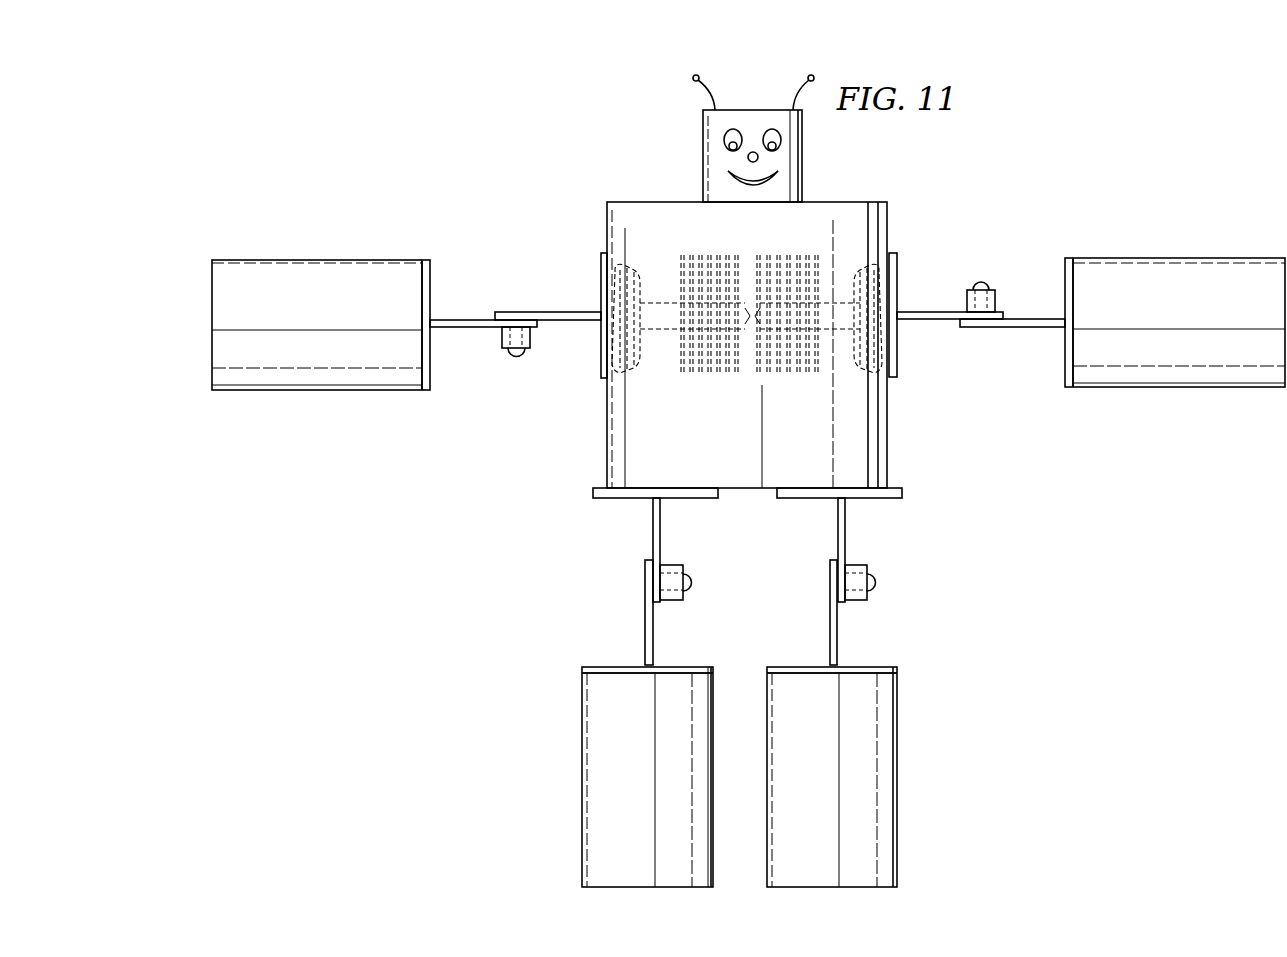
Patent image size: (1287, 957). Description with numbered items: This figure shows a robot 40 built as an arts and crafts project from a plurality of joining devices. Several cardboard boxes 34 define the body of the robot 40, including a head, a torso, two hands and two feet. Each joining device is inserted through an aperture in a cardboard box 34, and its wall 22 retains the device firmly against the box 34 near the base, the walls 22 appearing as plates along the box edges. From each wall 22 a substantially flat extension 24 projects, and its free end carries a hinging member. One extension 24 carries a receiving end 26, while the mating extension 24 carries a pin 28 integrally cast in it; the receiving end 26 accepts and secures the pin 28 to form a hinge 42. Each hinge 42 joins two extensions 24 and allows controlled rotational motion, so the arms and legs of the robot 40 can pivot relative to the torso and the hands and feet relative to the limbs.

The robot 40 is at (1016, 128).
The cardboard box 34 is at (703, 150).
The wall 22 is at (425, 258).
The extension 24 is at (470, 320).
The receiving end 26 is at (502, 340).
The pin 28 is at (514, 357).
The hinge 42 is at (513, 300).